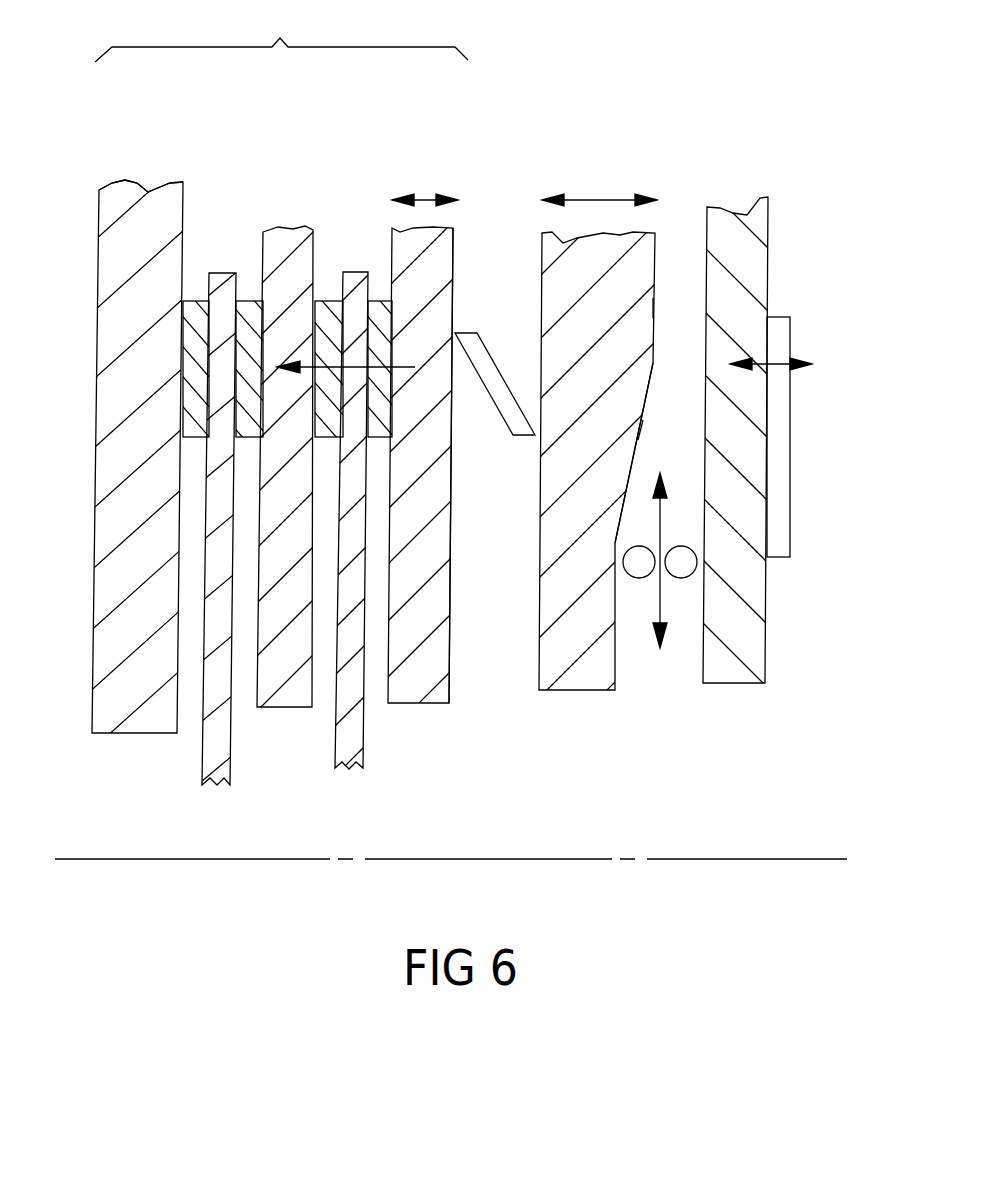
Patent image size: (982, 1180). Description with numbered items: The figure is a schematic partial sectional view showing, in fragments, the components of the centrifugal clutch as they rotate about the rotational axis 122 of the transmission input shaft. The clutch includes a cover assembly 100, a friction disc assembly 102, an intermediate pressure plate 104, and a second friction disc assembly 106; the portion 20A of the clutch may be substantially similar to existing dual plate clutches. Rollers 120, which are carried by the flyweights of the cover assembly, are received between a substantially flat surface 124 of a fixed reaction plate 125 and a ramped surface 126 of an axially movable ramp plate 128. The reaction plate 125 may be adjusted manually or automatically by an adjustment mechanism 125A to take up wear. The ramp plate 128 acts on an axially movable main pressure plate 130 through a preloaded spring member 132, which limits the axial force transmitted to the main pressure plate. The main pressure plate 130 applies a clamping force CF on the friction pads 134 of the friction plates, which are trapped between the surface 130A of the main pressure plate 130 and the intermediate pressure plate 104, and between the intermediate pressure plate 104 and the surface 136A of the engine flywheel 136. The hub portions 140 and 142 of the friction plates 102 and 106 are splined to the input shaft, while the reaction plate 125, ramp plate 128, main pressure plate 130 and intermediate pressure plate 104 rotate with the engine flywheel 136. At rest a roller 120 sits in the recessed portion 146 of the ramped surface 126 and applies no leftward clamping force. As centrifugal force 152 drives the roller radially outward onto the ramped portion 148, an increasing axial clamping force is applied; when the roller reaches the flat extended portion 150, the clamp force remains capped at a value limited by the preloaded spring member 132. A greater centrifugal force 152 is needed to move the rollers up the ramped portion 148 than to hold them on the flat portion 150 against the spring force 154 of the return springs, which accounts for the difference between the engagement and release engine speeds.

The portion of clutch 20A is at (281, 33).
The cover assembly 100 is at (536, 126).
The friction disc assembly 102 is at (400, 148).
The friction disc assembly 106 is at (297, 160).
The ramp plate 128 is at (600, 160).
The flat surface 124 is at (707, 220).
The reaction plate 125 is at (753, 258).
The adjustment mechanism 125A is at (780, 452).
The engine flywheel 136 is at (108, 345).
The surface of engine flywheel 136A is at (187, 203).
The friction pads 134 is at (193, 312).
The hub portion 142 is at (202, 752).
The intermediate pressure plate 104 is at (277, 707).
The hub portion 140 is at (363, 757).
The main pressure plate 130 is at (413, 703).
The surface of main pressure plate 130A is at (386, 500).
The preloaded spring member 132 is at (495, 390).
The clamping force CF is at (388, 372).
The ramped surface 126 is at (617, 673).
The recessed portion 146 is at (620, 543).
The flat extended portion 150 is at (653, 306).
The ramped portion 148 is at (640, 430).
The centrifugal force 152 is at (660, 525).
The spring force 154 is at (660, 608).
The rollers 120 is at (690, 575).
The rotational axis 122 is at (272, 860).